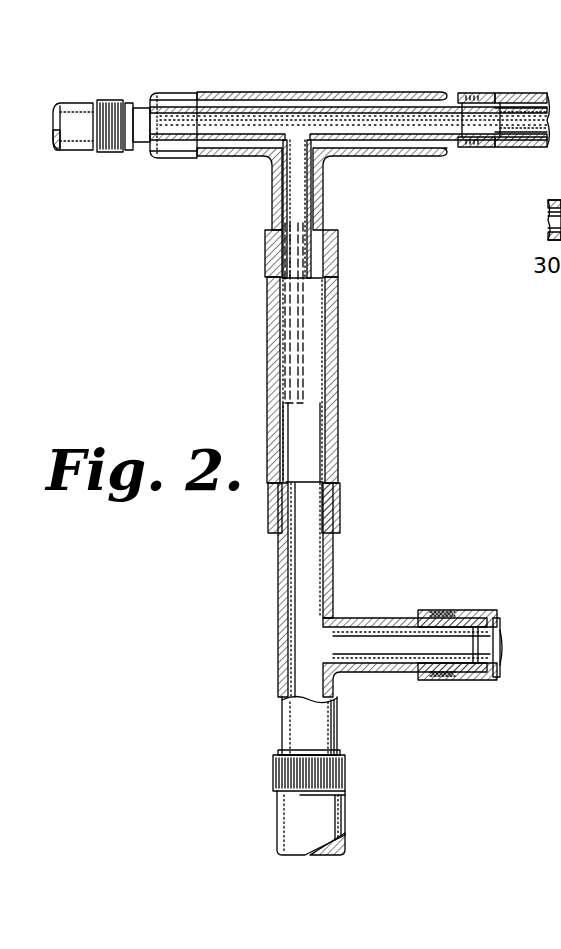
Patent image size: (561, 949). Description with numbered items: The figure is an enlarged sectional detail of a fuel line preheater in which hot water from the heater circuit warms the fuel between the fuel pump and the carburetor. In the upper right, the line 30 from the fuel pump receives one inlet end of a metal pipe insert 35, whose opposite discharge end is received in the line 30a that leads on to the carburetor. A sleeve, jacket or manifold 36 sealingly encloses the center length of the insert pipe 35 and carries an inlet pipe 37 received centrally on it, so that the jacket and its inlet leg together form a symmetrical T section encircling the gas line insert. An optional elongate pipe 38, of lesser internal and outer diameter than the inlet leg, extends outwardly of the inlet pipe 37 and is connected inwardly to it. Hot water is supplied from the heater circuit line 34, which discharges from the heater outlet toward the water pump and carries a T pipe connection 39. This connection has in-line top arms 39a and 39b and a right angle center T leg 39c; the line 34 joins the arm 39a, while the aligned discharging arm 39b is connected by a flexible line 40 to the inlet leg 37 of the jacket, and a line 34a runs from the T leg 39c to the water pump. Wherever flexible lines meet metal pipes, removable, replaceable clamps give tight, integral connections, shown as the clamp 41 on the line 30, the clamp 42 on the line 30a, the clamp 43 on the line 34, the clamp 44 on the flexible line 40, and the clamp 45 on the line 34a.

The line 30 is at (520, 93).
The line 30a is at (76, 104).
The line 34 is at (277, 836).
The line 34a is at (467, 615).
The metal pipe insert 35 is at (378, 107).
The sleeve, jacket or manifold 36 is at (318, 92).
The inlet pipe 37 is at (272, 200).
The elongate pipe 38 is at (302, 358).
The T pipe connection 39 is at (349, 619).
The T top arm 39a is at (282, 733).
The T top arm 39b is at (333, 566).
The center T leg 39c is at (352, 618).
The flexible line 40 is at (268, 395).
The clamp 41 is at (489, 93).
The clamp 42 is at (112, 153).
The clamp 43 is at (347, 784).
The clamp 44 is at (265, 267).
The clamp 45 is at (448, 678).